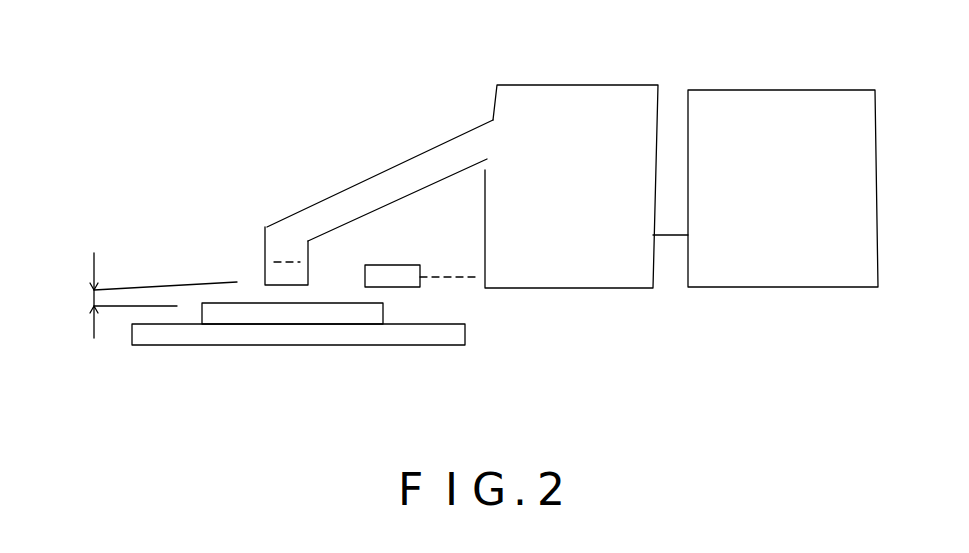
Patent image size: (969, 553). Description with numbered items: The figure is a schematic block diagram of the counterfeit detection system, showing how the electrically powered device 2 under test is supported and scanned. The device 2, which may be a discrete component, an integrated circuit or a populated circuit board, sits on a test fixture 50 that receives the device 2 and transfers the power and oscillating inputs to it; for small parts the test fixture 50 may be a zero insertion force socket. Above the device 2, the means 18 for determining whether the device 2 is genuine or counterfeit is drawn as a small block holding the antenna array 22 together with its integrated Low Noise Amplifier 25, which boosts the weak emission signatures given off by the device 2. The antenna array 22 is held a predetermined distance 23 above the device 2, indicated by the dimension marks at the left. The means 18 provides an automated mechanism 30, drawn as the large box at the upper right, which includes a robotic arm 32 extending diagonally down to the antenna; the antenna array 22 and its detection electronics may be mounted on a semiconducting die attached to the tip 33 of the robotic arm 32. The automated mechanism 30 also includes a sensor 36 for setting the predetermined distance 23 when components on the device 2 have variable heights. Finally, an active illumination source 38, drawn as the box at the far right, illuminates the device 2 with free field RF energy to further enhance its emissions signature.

The electrically powered device 2 is at (337, 315).
The means for determining condition 18 is at (211, 256).
The antenna array 22 is at (211, 256).
The predetermined distance 23 is at (94, 297).
The Low Noise Amplifier 25 is at (273, 277).
The automated mechanism 30 is at (543, 74).
The robotic arm 32 is at (397, 175).
The tip 33 is at (312, 262).
The sensor 36 is at (402, 275).
The active illumination source 38 is at (803, 273).
The test fixture 50 is at (270, 333).